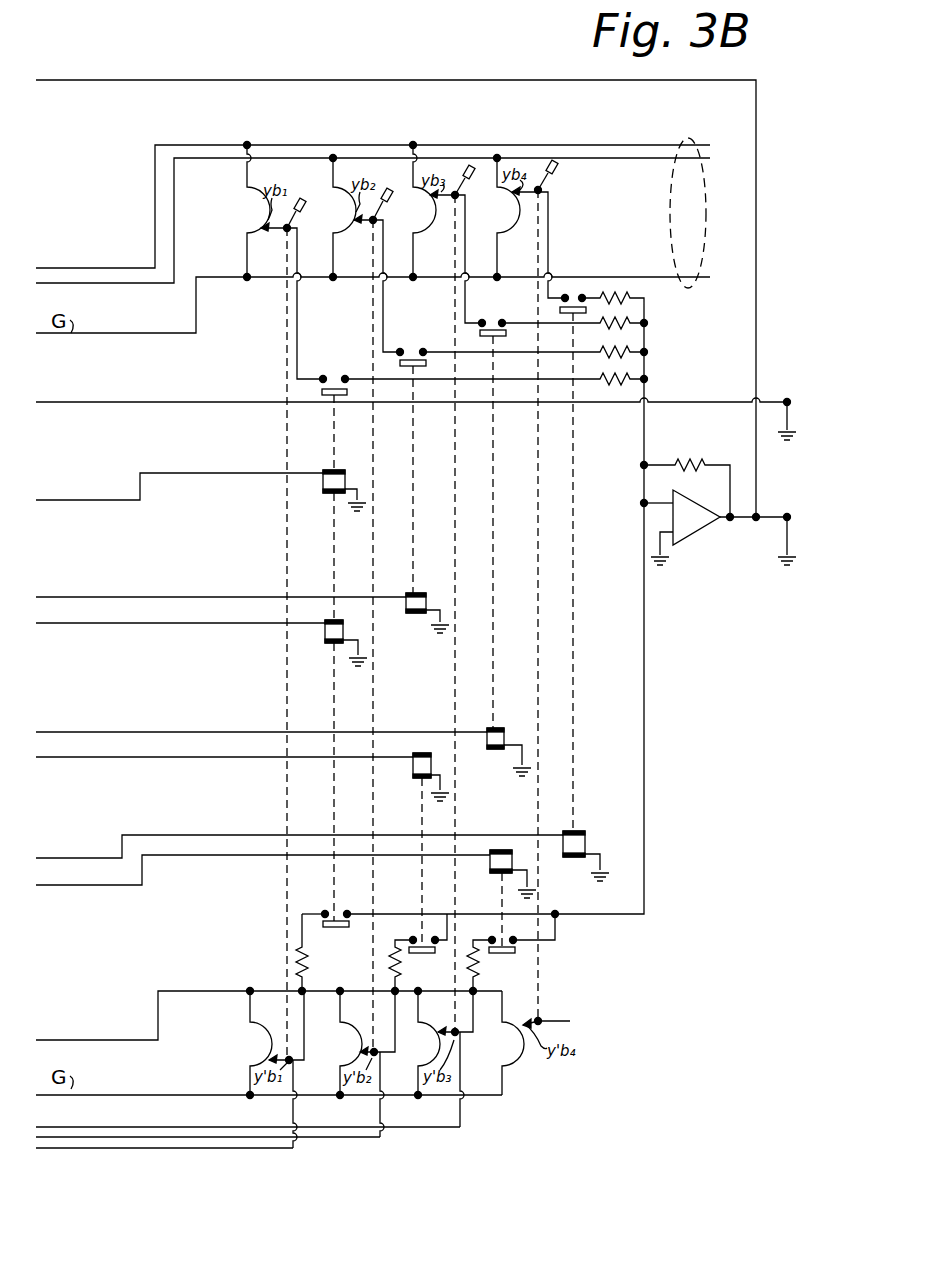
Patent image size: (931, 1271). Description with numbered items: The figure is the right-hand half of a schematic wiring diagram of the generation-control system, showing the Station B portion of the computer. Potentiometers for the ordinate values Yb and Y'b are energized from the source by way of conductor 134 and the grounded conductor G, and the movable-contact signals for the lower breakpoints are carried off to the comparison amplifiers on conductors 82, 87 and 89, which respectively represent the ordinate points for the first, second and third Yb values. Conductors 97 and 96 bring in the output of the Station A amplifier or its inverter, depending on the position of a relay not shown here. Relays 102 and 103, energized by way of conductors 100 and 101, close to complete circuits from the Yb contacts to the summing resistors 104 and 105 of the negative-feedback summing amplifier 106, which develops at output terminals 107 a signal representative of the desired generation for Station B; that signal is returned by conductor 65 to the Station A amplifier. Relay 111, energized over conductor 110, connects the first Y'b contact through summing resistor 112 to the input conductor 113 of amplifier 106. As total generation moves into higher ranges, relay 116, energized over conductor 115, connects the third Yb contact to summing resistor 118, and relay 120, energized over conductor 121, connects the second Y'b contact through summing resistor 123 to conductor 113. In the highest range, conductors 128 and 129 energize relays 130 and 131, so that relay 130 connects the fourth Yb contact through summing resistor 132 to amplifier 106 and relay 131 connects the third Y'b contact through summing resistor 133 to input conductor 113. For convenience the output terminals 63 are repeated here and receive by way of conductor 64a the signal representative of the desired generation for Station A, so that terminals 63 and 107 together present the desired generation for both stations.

The conductor 65 is at (78, 79).
The conductor 97 is at (79, 268).
The conductor 96 is at (86, 284).
The conductor 64a is at (89, 400).
The output terminals 63 is at (787, 413).
The conductor 100 is at (46, 500).
The conductor 101 is at (48, 597).
The conductor 110 is at (46, 624).
The relay 102 is at (328, 483).
The relay 103 is at (427, 600).
The relay 111 is at (344, 632).
The conductor 115 is at (51, 732).
The conductor 121 is at (48, 758).
The relay 116 is at (508, 738).
The relay 120 is at (428, 766).
The conductor 128 is at (51, 858).
The conductor 129 is at (48, 886).
The relay 130 is at (585, 846).
The relay 131 is at (512, 863).
The summing resistor 132 is at (616, 290).
The summing resistor 118 is at (632, 320).
The summing resistor 105 is at (632, 348).
The summing resistor 104 is at (632, 376).
The summing amplifier 106 is at (706, 522).
The output terminals 107 is at (787, 529).
The input conductor 113 is at (648, 698).
The summing resistor 112 is at (308, 963).
The summing resistor 123 is at (398, 968).
The summing resistor 133 is at (478, 968).
The conductor 134 is at (66, 1040).
The conductor 82 is at (77, 1127).
The conductor 87 is at (132, 1137).
The conductor 89 is at (191, 1148).